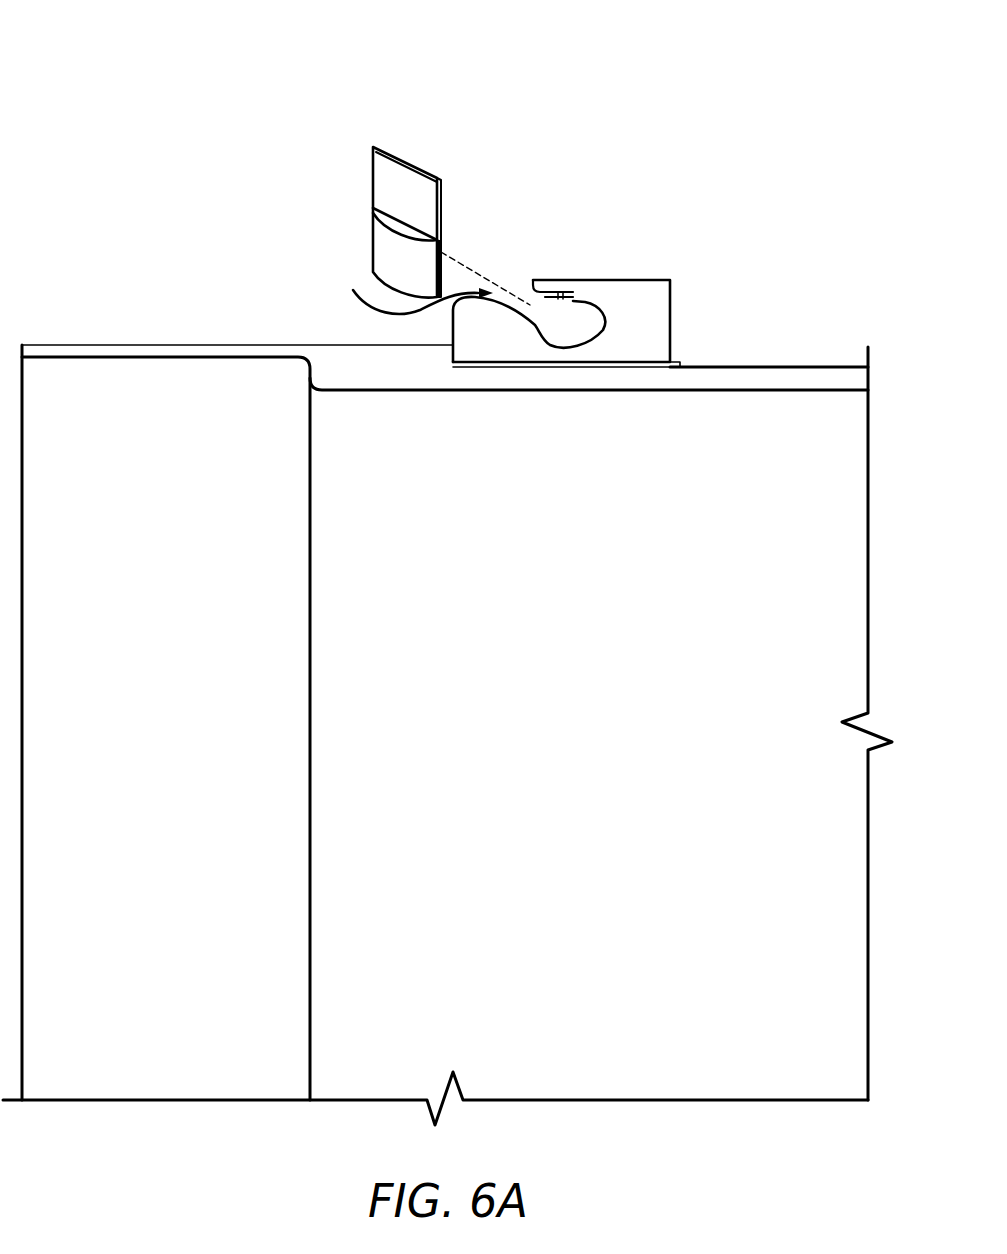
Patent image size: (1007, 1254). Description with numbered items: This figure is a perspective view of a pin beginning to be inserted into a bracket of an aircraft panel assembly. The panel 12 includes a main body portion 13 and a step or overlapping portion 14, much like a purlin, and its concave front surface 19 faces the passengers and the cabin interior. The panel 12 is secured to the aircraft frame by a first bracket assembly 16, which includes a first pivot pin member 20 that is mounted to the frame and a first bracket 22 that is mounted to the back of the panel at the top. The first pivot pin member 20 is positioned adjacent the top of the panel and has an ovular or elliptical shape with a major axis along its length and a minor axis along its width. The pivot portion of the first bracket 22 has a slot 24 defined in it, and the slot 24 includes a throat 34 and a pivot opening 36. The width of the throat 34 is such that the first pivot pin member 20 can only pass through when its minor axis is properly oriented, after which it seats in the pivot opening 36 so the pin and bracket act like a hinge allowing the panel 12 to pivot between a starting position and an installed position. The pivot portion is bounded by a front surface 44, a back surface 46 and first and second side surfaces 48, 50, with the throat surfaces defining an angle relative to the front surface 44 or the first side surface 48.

The panel 12 is at (833, 373).
The main body portion 13 is at (743, 1073).
The overlapping portion 14 is at (112, 370).
The first bracket assembly 16 is at (560, 125).
The front surface 19 is at (553, 632).
The first pivot pin member 20 is at (328, 162).
The first bracket 22 is at (520, 282).
The slot 24 is at (412, 285).
The throat 34 is at (525, 310).
The pivot opening 36 is at (573, 322).
The front surface 44 is at (642, 278).
The back surface 46 is at (650, 363).
The first side surface 48 is at (453, 333).
The second side surface 50 is at (670, 298).